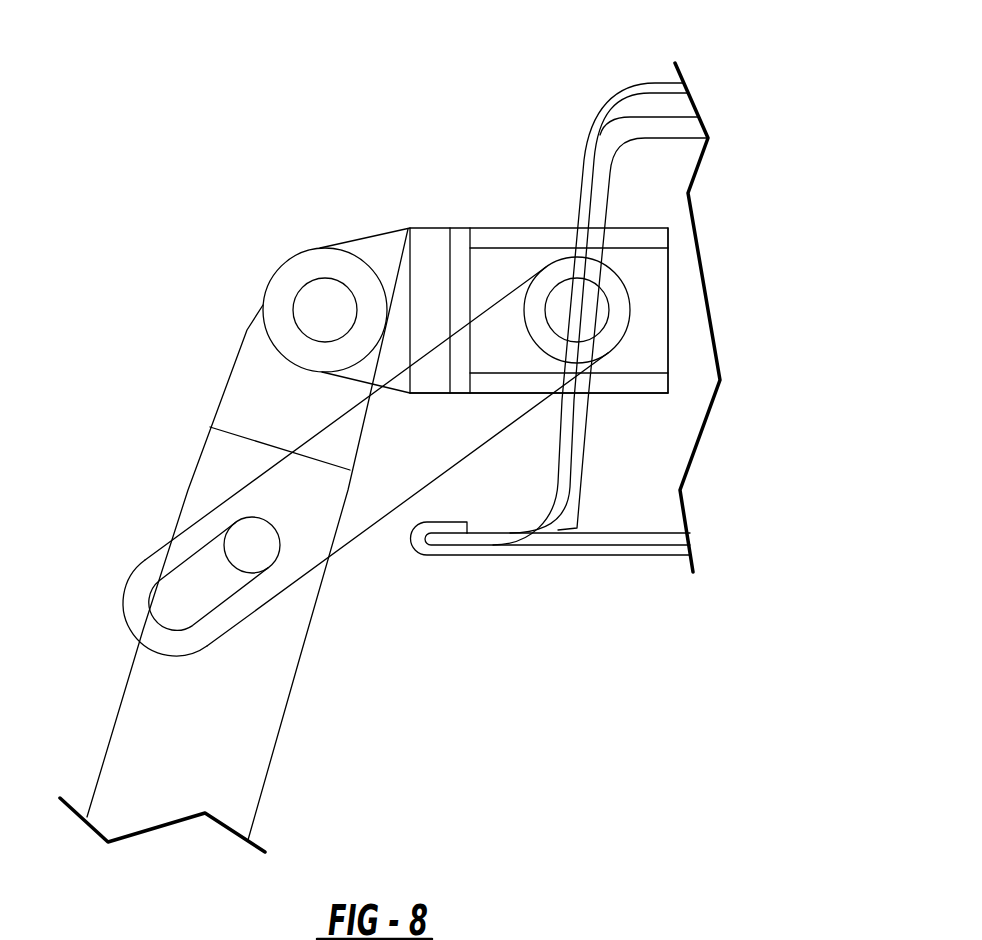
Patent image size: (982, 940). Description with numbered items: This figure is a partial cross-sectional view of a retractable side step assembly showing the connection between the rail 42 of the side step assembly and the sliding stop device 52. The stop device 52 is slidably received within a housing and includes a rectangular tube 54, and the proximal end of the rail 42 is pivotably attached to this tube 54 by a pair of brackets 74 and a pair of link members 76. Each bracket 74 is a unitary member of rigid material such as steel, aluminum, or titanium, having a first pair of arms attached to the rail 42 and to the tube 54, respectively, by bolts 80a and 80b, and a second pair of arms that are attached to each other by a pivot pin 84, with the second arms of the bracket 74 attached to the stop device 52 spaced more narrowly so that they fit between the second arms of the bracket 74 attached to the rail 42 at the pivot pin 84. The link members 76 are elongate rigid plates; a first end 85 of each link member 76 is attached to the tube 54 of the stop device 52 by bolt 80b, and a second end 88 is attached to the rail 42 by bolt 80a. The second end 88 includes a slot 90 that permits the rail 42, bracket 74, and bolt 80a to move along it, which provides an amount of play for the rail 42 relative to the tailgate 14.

The tailgate 14 is at (565, 557).
The rail 42 is at (305, 645).
The sliding stop device 52 is at (662, 221).
The rectangular tube 54 is at (660, 394).
The bracket 74 is at (432, 238).
The link member 76 is at (377, 523).
The bolt 80a is at (258, 550).
The bolt 80b is at (602, 312).
The pivot pin 84 is at (323, 300).
The first end 85 is at (620, 322).
The second end 88 is at (130, 588).
The slot 90 is at (207, 615).